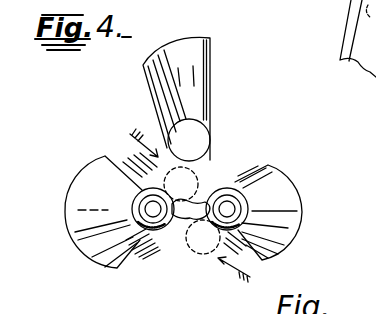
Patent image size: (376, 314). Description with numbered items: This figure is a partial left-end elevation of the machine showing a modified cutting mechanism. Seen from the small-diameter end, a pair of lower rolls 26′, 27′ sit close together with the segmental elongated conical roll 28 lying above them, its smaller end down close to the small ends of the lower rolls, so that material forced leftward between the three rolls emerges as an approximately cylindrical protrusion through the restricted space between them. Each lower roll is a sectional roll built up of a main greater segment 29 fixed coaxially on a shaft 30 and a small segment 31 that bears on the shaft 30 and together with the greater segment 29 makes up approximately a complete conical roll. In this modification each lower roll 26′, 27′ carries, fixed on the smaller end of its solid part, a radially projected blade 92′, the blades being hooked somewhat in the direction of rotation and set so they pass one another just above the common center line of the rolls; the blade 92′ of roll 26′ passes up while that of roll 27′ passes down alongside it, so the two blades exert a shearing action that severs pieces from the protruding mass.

The segmental elongated conical roll 28 is at (196, 101).
The lower roll 27′ is at (85, 175).
The lower roll 26′ is at (288, 197).
The main greater segment 29 is at (127, 255).
The small segment 31 is at (92, 256).
The shaft 30 is at (150, 210).
The radially projected blade 92′ is at (211, 161).